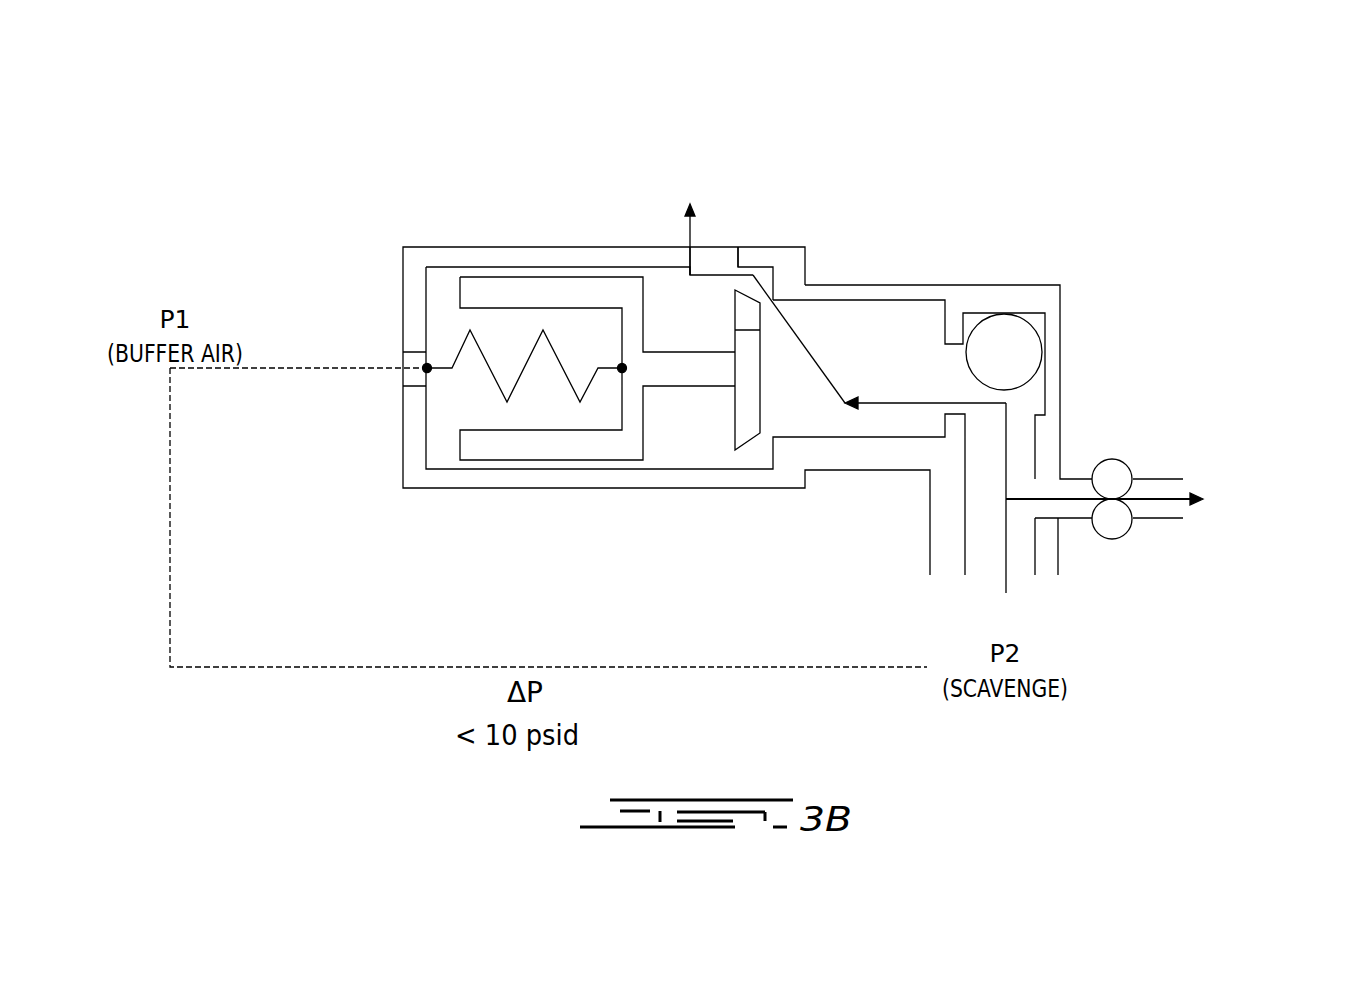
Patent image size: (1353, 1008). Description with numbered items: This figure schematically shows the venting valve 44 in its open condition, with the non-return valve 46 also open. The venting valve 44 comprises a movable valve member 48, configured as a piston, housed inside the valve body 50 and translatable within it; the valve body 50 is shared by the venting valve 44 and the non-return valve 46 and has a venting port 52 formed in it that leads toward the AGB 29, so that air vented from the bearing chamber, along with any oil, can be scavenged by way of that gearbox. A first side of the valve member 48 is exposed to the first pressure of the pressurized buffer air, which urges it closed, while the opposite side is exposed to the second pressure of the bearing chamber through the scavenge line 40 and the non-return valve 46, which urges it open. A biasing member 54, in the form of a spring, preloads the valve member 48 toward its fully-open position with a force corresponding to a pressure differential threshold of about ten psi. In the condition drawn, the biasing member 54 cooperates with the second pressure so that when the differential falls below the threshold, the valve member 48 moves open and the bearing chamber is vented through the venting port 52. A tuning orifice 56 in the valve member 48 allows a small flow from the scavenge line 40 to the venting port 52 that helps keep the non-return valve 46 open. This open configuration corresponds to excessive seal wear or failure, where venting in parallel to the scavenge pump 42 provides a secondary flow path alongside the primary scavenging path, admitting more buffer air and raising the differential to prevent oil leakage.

The venting valve 44 is at (402, 181).
The valve body 50 is at (508, 477).
The venting port 52 is at (723, 258).
The AGB 29 is at (688, 205).
The biasing member 54 is at (458, 342).
The valve member 48 is at (695, 367).
The tuning orifice 56 is at (760, 322).
The non-return valve 46 is at (1097, 349).
The scavenge pump 42 is at (1112, 475).
The scavenge line 40 is at (1022, 543).